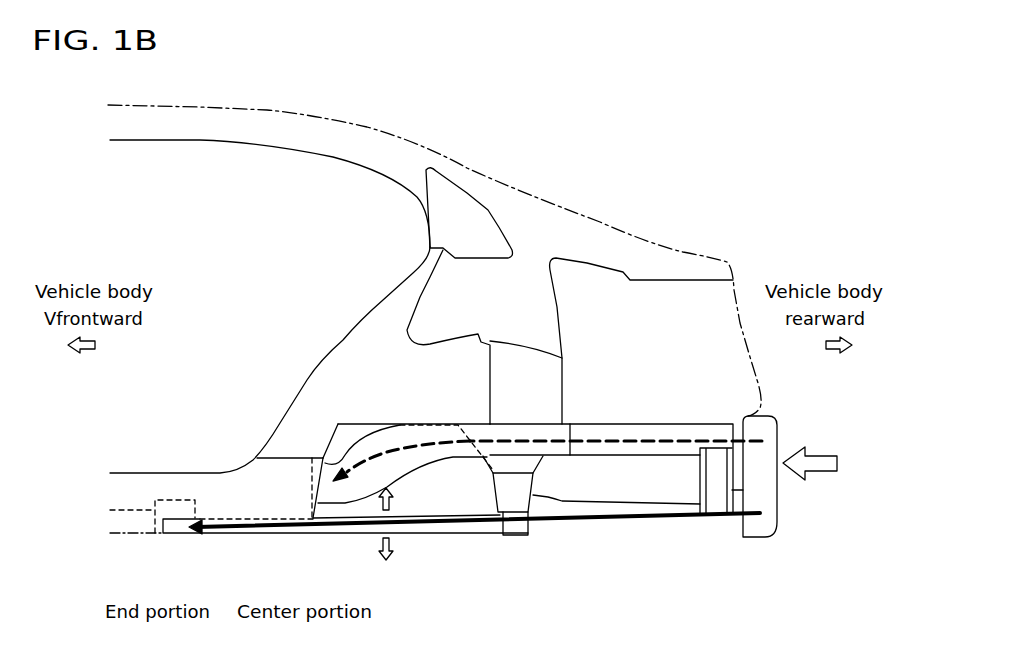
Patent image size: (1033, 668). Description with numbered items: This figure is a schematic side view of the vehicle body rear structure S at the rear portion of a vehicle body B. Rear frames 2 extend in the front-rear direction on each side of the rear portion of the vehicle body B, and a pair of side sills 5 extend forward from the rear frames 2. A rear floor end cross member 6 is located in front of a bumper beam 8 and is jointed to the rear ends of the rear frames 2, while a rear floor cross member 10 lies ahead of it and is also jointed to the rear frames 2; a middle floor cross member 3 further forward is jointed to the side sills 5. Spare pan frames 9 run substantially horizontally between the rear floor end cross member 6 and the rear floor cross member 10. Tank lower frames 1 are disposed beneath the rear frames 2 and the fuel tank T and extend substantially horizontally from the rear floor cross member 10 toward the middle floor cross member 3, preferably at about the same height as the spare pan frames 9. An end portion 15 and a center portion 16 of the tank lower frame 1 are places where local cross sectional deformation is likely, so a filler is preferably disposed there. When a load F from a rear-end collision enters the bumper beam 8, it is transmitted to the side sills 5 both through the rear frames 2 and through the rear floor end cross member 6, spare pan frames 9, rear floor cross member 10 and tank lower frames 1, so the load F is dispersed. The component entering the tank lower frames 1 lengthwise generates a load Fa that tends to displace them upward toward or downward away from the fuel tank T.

The vehicle body B is at (329, 119).
The vehicle body rear structure S is at (648, 333).
The fuel tank T is at (350, 432).
The tank lower frame 1 is at (443, 530).
The rear frame 2 is at (668, 436).
The middle floor cross member 3 is at (175, 500).
The side sill 5 is at (135, 487).
The rear floor end cross member 6 is at (713, 500).
The bumper beam 8 is at (777, 500).
The spare pan frame 9 is at (622, 507).
The rear floor cross member 10 is at (515, 487).
The end portion 15 is at (178, 537).
The center portion 16 is at (320, 537).
The load F is at (821, 463).
The load Fa is at (399, 525).